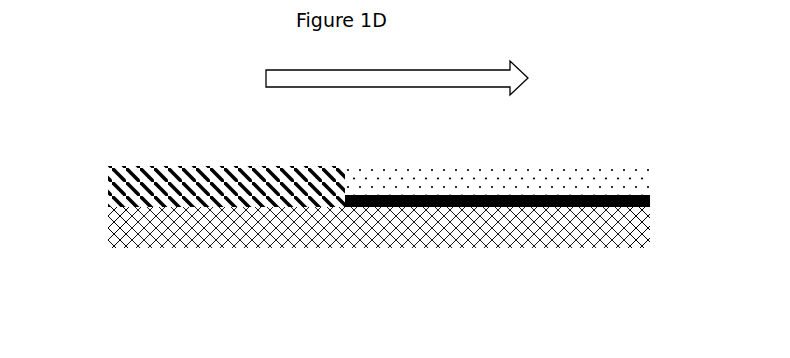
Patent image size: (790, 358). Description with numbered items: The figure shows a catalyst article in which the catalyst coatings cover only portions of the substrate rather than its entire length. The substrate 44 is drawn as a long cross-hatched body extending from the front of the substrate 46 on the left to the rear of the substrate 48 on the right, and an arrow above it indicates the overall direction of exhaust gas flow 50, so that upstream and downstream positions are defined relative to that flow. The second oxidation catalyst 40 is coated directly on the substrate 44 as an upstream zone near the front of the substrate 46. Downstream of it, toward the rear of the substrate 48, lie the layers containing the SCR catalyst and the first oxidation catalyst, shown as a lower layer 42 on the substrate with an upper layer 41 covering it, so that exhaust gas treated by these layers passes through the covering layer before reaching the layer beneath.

The second oxidation catalyst 40 is at (160, 166).
The dotted second layer 41 is at (415, 182).
The black bar layer 42 is at (650, 192).
The cross-hatched substrate 44 is at (620, 232).
The front of the substrate 46 is at (108, 223).
The rear of the substrate 48 is at (650, 228).
The direction of exhaust gas flow 50 is at (440, 78).